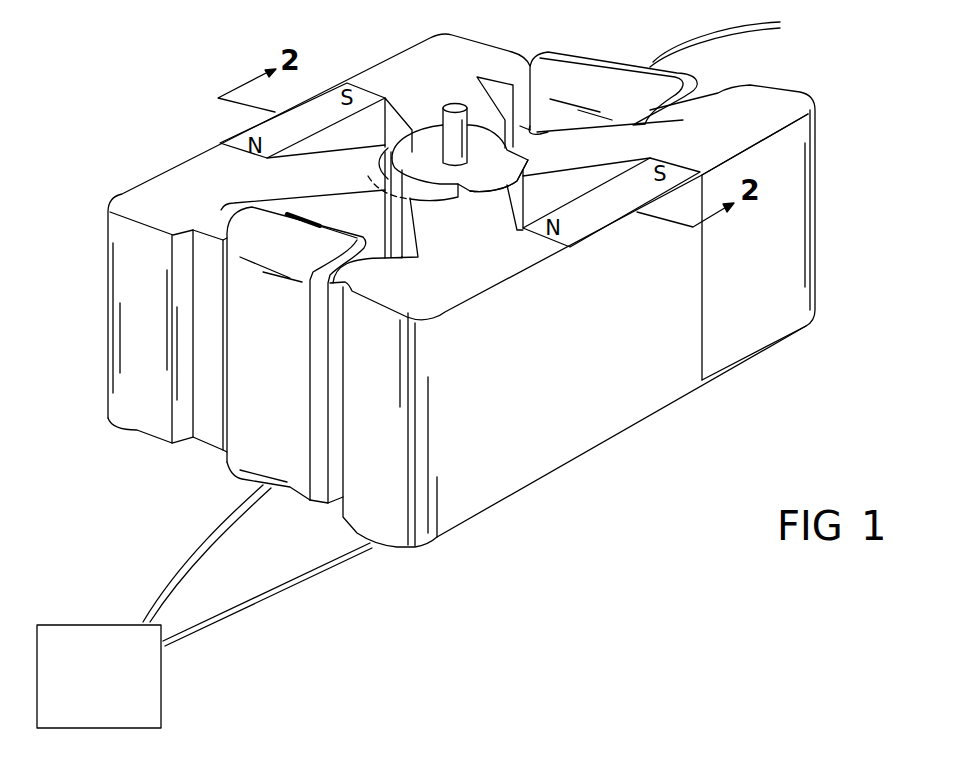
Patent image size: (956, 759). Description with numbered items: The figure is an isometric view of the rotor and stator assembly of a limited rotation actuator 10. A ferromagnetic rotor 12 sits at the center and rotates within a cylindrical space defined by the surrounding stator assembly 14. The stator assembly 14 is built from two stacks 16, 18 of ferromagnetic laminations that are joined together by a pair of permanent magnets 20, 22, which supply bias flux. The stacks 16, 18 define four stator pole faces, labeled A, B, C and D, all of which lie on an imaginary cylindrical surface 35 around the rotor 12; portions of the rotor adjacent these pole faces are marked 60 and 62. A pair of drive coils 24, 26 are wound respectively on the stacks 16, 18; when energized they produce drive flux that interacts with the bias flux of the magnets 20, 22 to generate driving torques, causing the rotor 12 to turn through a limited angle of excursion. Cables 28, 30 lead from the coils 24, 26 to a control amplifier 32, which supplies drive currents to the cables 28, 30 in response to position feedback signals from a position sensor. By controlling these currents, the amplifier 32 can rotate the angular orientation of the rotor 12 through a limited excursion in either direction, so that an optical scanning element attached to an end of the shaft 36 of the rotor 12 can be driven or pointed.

The limited rotation actuator 10 is at (625, 587).
The ferromagnetic rotor 12 is at (471, 174).
The stator assembly 14 is at (92, 198).
The stack of ferromagnetic laminations 16 is at (468, 474).
The stack of ferromagnetic laminations 18 is at (756, 312).
The permanent magnet 20 is at (590, 207).
The permanent magnet 22 is at (285, 132).
The drive coil 24 is at (267, 254).
The drive coil 26 is at (589, 92).
The cable 28 is at (190, 541).
The cable 30 is at (268, 600).
The control amplifier 32 is at (86, 684).
The imaginary cylindrical surface 35 is at (522, 125).
The shaft 36 is at (454, 104).
The rotor lower pole section 60 is at (519, 180).
The rotor upper pole section 62 is at (406, 137).